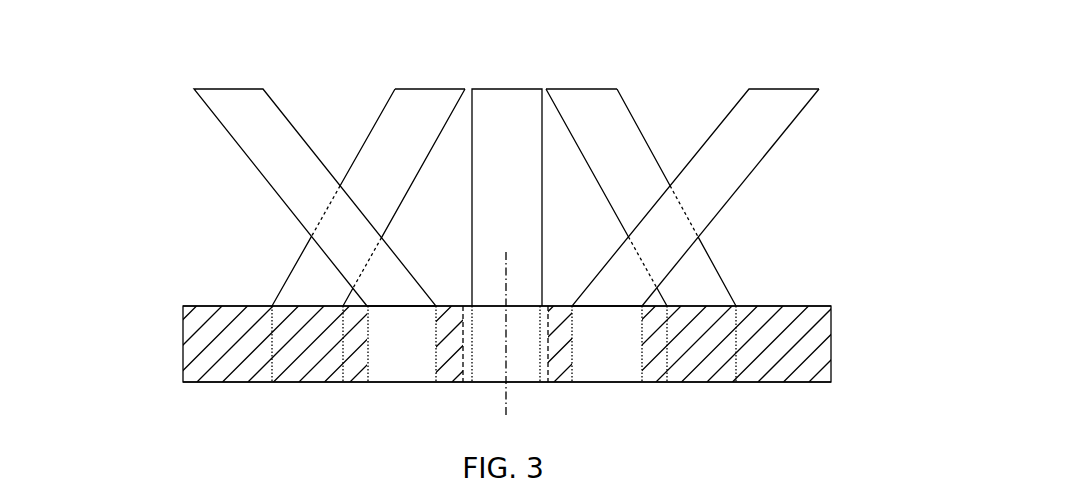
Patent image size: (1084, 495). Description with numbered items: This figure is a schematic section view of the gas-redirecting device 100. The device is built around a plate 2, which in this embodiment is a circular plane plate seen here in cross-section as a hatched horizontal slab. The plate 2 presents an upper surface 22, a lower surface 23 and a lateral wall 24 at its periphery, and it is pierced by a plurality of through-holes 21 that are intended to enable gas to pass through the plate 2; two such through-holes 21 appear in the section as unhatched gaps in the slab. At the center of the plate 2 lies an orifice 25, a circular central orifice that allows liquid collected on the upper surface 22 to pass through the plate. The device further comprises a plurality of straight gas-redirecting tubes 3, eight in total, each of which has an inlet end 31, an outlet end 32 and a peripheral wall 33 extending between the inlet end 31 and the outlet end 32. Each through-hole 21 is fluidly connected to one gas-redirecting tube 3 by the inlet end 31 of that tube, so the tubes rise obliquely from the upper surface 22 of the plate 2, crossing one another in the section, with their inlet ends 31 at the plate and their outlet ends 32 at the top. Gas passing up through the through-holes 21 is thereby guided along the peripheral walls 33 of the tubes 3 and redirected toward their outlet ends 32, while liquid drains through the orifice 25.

The gas-redirecting device 100 is at (108, 32).
The plate 2 is at (190, 325).
The gas-redirecting tube 3 is at (728, 158).
The through-hole 21 is at (412, 373).
The upper surface 22 is at (775, 306).
The lower surface 23 is at (752, 382).
The lateral wall 24 is at (180, 355).
The orifice 25 is at (495, 381).
The inlet end 31 is at (272, 306).
The outlet end 32 is at (418, 87).
The peripheral wall 33 is at (775, 146).